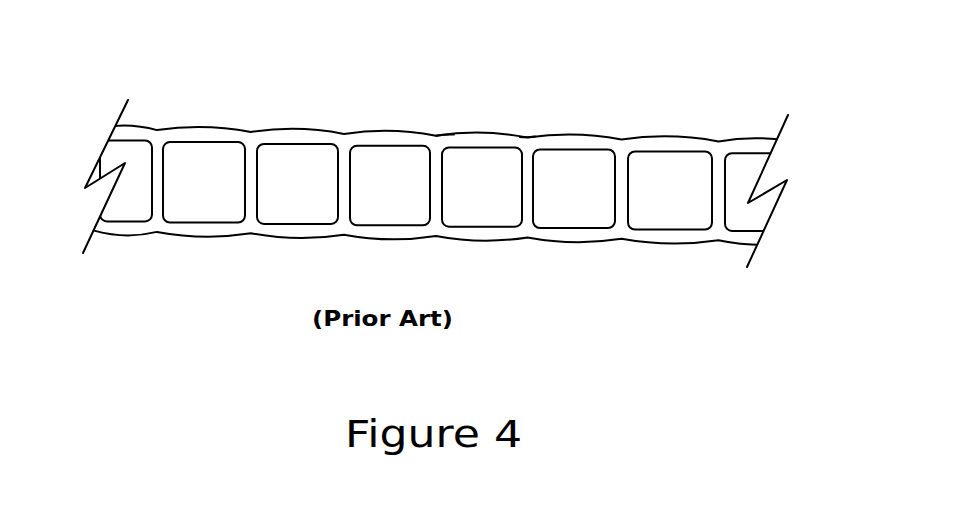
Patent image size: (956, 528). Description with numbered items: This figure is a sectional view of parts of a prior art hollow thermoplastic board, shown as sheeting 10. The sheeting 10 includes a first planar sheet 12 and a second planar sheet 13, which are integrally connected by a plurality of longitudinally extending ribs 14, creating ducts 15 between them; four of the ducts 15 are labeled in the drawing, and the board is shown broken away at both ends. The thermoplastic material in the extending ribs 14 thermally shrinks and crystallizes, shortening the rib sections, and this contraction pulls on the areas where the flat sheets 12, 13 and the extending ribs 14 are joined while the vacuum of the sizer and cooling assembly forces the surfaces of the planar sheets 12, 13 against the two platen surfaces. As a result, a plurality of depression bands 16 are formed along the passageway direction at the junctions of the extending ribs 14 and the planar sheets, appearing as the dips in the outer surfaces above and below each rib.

The sheeting 10 is at (455, 180).
The first planar sheet 12 is at (758, 143).
The second planar sheet 13 is at (758, 243).
The extending ribs 14 is at (622, 225).
The ducts 15 is at (445, 186).
The depression bands 16 is at (530, 135).